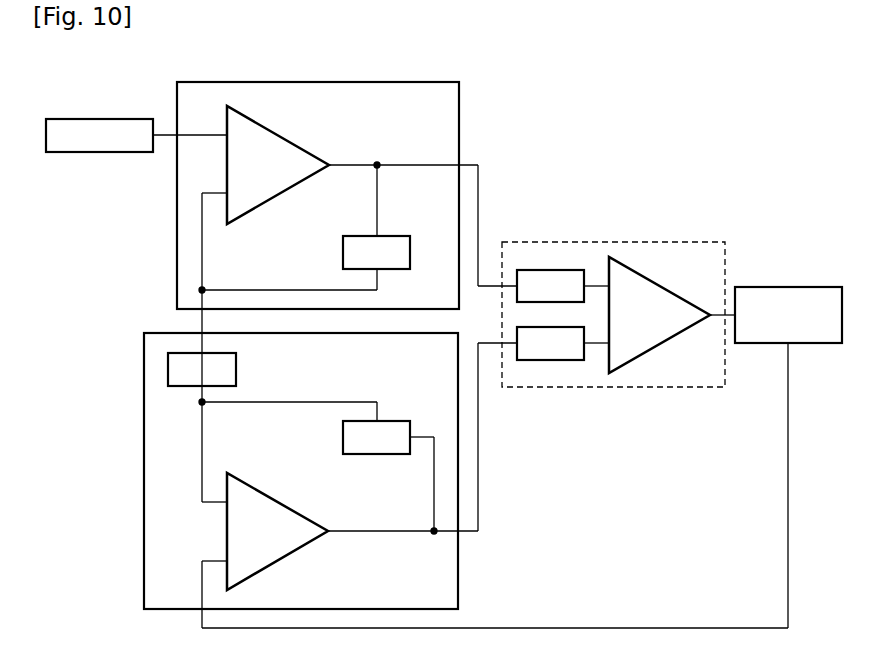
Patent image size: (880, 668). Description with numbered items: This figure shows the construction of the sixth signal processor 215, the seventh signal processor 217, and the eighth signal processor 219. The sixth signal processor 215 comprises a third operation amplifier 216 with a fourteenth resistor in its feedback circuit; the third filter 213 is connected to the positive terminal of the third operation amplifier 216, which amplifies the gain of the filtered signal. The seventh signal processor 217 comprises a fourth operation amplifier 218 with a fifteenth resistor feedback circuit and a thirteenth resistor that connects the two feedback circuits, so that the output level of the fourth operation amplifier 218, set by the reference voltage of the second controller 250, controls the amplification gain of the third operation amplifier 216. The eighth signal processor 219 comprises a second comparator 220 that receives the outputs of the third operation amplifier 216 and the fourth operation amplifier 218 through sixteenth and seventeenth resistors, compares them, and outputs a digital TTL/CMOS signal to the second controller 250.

The third filter 213 is at (128, 117).
The sixth signal processor 215 is at (430, 82).
The third operation amplifier 216 is at (288, 138).
The seventh signal processor 217 is at (143, 455).
The fourth operation amplifier 218 is at (290, 507).
The eighth signal processor 219 is at (675, 242).
The second comparator 220 is at (672, 287).
The second controller 250 is at (792, 287).